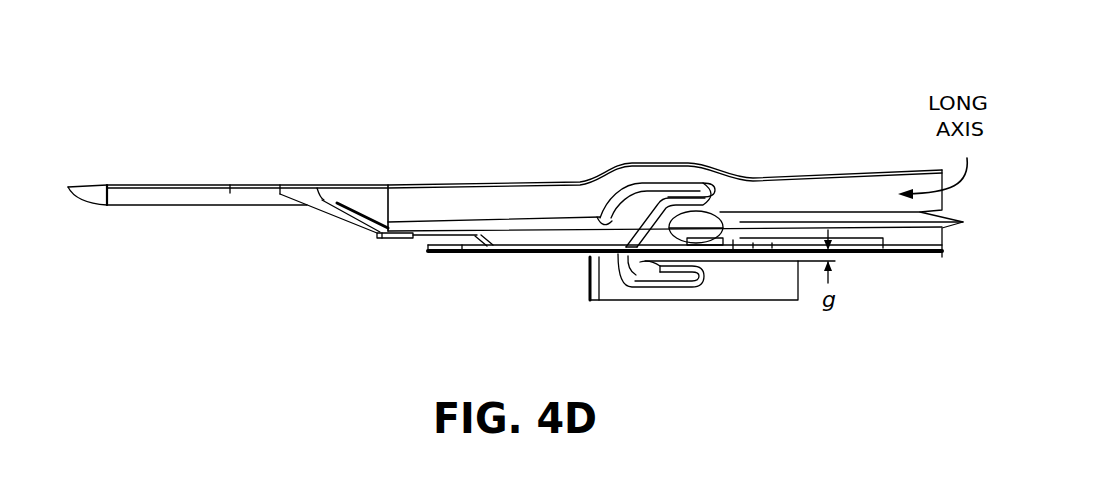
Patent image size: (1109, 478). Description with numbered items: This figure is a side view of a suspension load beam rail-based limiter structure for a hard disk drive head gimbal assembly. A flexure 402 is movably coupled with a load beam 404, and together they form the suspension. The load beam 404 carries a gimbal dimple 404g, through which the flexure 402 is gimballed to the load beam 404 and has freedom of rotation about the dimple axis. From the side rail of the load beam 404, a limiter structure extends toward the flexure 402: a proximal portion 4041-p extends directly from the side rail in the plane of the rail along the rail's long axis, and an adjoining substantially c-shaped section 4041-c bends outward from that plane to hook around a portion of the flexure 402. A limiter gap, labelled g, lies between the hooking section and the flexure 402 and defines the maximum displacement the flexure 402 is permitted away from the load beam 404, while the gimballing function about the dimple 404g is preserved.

The load beam 404 is at (451, 198).
The flexure 402 is at (472, 252).
The proximal portion 4041-p is at (697, 213).
The c-shaped section 4041-c is at (631, 278).
The gimbal dimple 404g is at (714, 214).